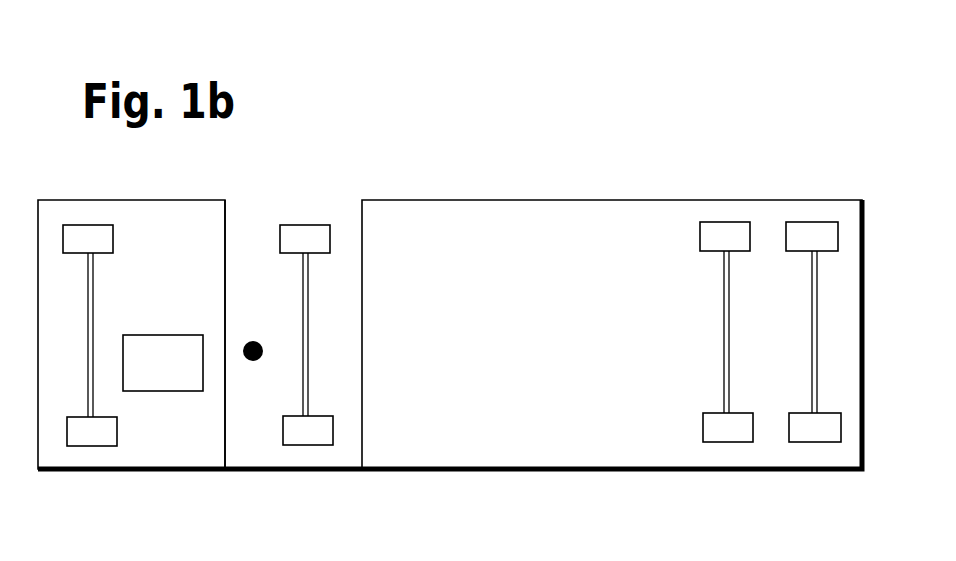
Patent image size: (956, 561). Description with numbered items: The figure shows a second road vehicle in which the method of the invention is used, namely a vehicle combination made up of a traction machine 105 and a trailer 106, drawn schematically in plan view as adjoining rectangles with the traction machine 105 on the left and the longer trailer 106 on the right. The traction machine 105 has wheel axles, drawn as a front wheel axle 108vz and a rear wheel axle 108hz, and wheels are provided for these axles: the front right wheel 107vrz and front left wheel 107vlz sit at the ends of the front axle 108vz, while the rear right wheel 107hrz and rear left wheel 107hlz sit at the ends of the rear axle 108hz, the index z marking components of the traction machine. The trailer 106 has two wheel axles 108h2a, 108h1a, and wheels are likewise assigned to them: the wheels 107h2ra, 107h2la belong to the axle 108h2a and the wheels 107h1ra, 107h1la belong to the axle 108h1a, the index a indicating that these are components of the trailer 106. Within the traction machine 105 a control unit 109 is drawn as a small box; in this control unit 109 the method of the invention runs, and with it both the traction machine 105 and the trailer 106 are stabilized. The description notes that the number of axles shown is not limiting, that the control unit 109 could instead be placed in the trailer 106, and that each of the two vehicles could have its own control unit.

The traction machine 105 is at (166, 220).
The trailer 106 is at (489, 218).
The wheel 107vrz is at (86, 233).
The wheel 107vlz is at (90, 438).
The wheel 107hrz is at (303, 233).
The wheel 107hlz is at (306, 436).
The wheel 107h2ra is at (727, 230).
The wheel 107h1ra is at (800, 230).
The wheel 107h2la is at (730, 434).
The wheel 107h1la is at (803, 434).
The wheel axle 108vz is at (118, 312).
The wheel axle 108hz is at (303, 318).
The wheel axle 108h2a is at (724, 318).
The wheel axle 108h1a is at (812, 318).
The control unit 109 is at (146, 383).